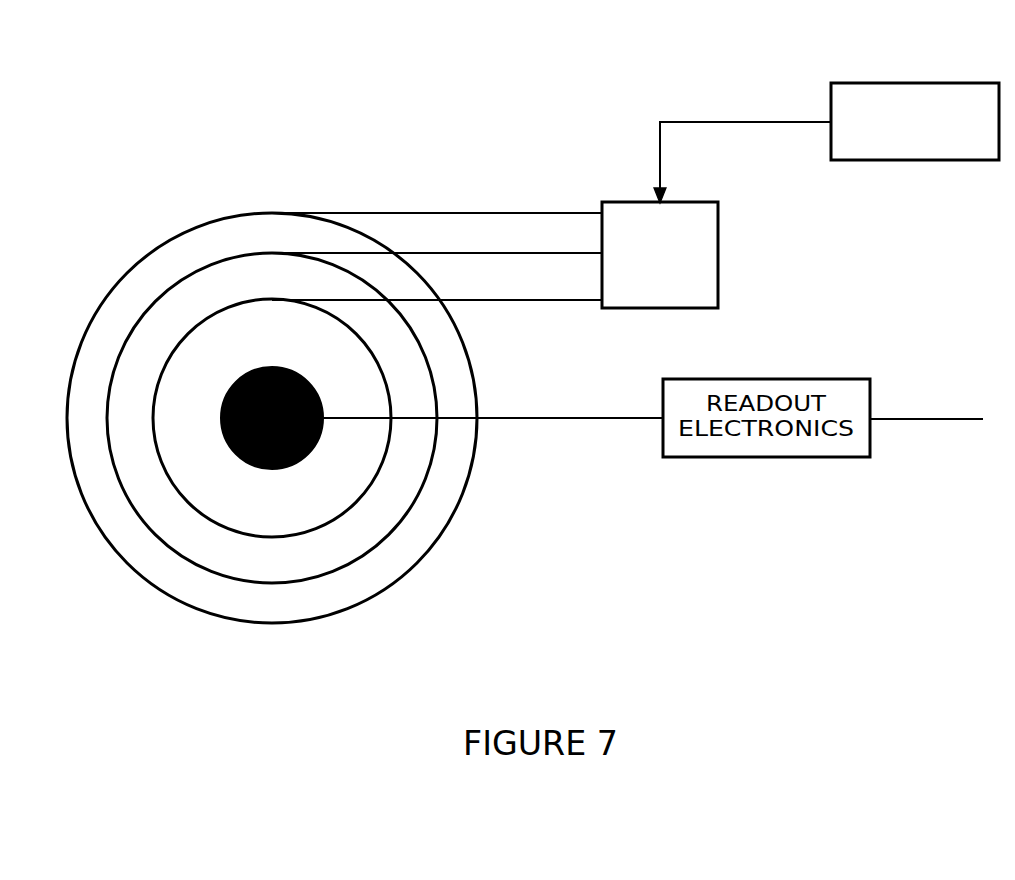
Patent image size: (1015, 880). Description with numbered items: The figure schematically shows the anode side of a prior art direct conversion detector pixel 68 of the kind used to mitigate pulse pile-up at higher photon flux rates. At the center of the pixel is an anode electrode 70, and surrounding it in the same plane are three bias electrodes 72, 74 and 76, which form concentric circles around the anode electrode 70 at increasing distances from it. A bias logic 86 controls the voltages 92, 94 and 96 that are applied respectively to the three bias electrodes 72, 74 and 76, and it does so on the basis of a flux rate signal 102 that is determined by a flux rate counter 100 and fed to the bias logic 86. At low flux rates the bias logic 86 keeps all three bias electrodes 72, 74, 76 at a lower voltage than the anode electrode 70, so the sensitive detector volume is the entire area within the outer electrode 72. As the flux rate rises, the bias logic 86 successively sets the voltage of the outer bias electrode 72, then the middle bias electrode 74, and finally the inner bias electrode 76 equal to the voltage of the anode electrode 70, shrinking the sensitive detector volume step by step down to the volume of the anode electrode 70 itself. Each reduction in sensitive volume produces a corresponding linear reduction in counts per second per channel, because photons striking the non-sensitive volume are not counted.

The detector pixel 68 is at (178, 190).
The anode electrode 70 is at (270, 468).
The bias electrode 72 is at (352, 606).
The bias electrode 74 is at (382, 544).
The bias electrode 76 is at (375, 476).
The bias logic 86 is at (718, 248).
The voltage 92 is at (463, 213).
The voltage 94 is at (463, 252).
The voltage 96 is at (463, 300).
The flux rate counter 100 is at (915, 83).
The flux rate signal 102 is at (662, 158).